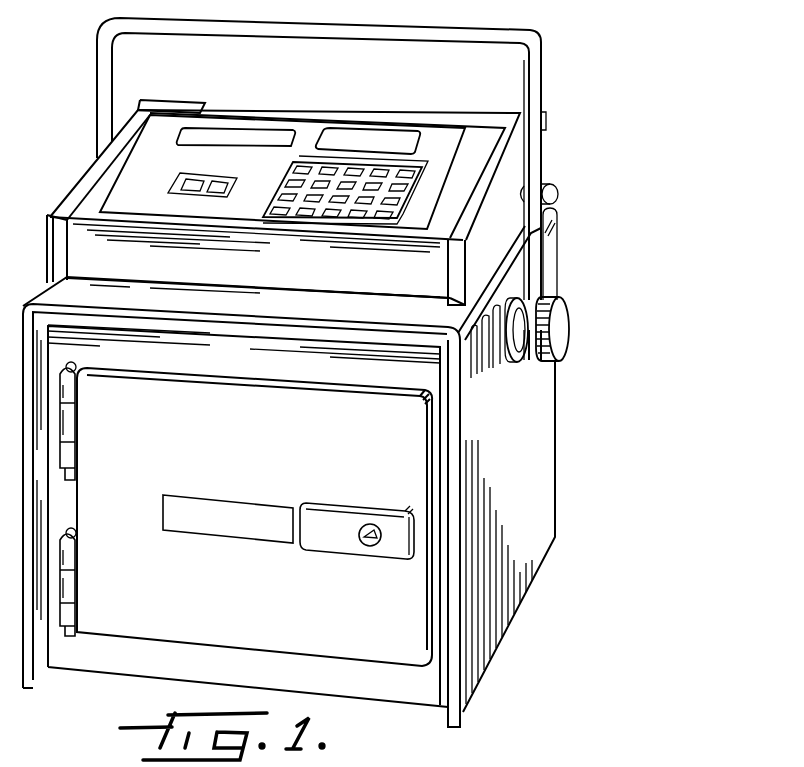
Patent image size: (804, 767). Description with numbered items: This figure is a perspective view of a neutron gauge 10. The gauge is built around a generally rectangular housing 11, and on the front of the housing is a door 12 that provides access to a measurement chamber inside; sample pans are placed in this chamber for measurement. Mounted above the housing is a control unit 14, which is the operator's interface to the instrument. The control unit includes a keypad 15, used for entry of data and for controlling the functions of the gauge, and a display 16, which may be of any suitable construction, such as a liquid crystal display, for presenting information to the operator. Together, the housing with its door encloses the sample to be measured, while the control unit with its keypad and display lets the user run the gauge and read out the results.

The neutron gauge 10 is at (378, 372).
The housing 11 is at (330, 476).
The door 12 is at (98, 626).
The control unit 14 is at (237, 140).
The keypad 15 is at (298, 163).
The display 16 is at (373, 145).